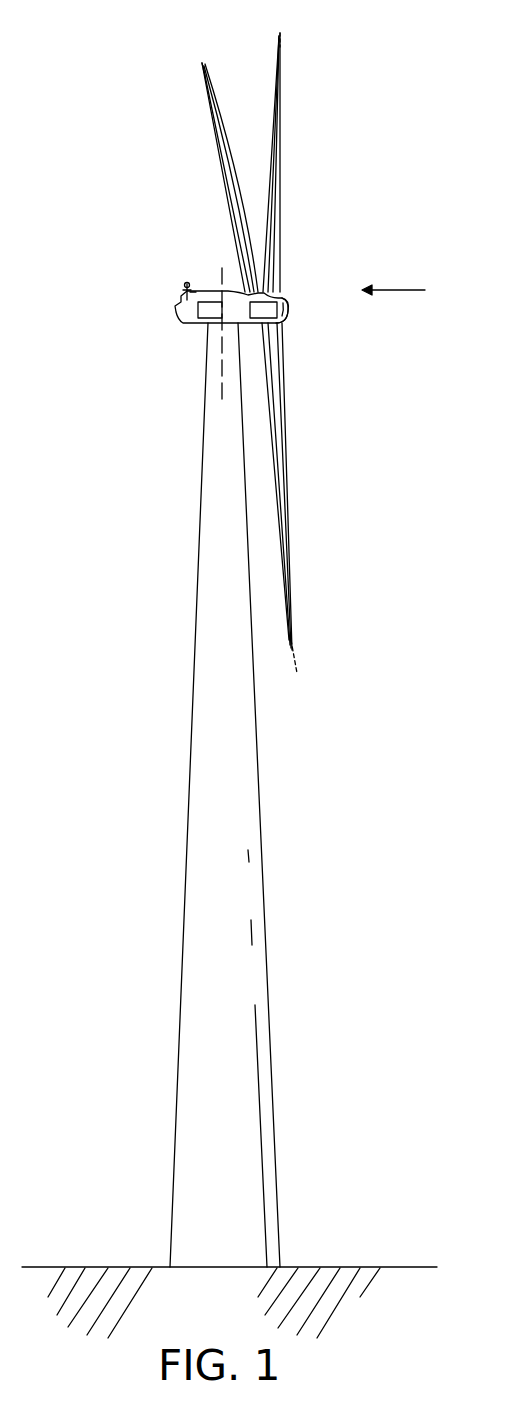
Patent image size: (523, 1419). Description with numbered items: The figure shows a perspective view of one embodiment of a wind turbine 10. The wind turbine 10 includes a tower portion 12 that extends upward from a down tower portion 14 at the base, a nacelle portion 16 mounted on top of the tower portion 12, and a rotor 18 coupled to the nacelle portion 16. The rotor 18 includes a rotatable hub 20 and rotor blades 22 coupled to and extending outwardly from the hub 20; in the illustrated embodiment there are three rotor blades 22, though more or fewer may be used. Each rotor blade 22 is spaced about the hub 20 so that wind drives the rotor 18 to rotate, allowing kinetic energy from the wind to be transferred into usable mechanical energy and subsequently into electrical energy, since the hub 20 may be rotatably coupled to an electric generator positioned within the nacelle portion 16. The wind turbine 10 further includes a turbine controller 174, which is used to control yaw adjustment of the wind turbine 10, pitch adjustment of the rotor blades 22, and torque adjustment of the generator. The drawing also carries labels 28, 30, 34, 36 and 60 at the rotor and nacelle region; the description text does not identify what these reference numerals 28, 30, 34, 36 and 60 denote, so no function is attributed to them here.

The wind turbine 10 is at (340, 94).
The tower portion 12 is at (192, 1057).
The down tower portion 14 is at (255, 1237).
The nacelle portion 16 is at (198, 324).
The rotor 18 is at (294, 276).
The rotatable hub 20 is at (285, 319).
The rotor blade 22 is at (275, 102).
The wind direction 28 is at (398, 290).
The rotor shaft 30 is at (285, 302).
The blade tips 34 is at (283, 47).
The yaw axis 36 is at (222, 373).
The sensor 60 is at (185, 283).
The turbine controller 174 is at (197, 290).